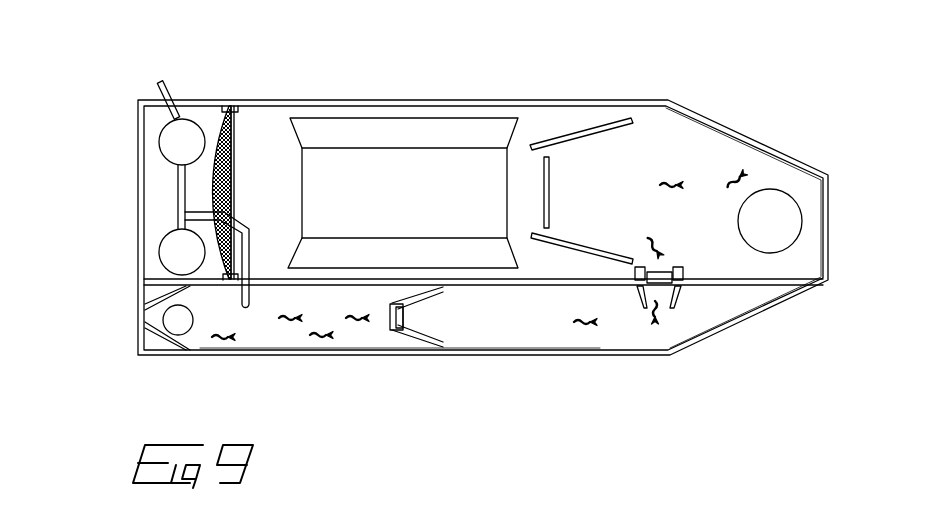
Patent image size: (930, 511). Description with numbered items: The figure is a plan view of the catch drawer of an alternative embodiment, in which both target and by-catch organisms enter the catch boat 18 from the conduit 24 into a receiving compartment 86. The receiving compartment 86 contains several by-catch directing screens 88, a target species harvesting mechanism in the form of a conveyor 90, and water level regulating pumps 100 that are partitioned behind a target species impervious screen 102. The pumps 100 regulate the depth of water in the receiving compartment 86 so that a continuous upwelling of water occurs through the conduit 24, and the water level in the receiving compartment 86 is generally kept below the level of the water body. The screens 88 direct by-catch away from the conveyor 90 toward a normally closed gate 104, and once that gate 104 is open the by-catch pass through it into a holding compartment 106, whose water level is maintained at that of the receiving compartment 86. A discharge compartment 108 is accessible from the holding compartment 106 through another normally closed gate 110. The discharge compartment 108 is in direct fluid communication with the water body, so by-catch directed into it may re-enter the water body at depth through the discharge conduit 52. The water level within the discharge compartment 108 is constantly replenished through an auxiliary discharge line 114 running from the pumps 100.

The catch boat 18 is at (418, 100).
The conduit 24 is at (778, 205).
The discharge conduit 52 is at (180, 320).
The receiving compartment 86 is at (700, 148).
The by-catch directing screens 88 is at (588, 138).
The conveyor 90 is at (340, 142).
The water level regulating pumps 100 is at (182, 141).
The target species impervious screen 102 is at (219, 140).
The gate 104 is at (663, 272).
The holding compartment 106 is at (620, 332).
The discharge compartment 108 is at (368, 335).
The gate 110 is at (404, 317).
The auxiliary discharge line 114 is at (243, 222).